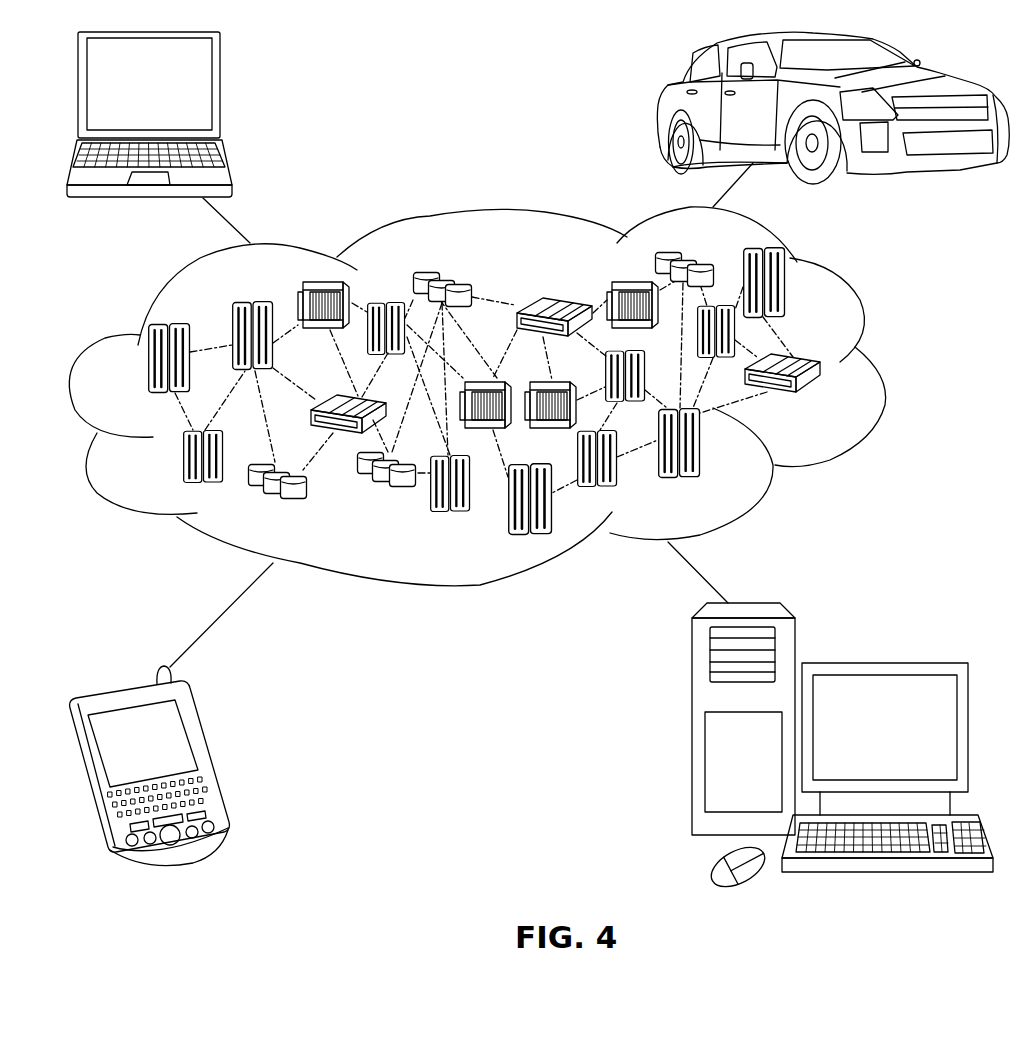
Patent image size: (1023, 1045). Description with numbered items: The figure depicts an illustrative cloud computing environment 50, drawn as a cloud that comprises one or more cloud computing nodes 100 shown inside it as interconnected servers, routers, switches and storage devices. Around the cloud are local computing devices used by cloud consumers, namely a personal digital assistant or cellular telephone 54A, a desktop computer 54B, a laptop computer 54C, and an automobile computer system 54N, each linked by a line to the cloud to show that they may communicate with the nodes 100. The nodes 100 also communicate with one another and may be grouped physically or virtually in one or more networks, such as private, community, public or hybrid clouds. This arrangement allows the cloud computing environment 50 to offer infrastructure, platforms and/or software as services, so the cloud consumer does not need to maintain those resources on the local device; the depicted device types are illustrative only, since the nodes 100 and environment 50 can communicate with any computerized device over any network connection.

The cloud computing environment 50 is at (883, 368).
The cloud computing nodes 100 is at (832, 402).
The personal digital assistant or cellular telephone 54A is at (208, 757).
The desktop computer 54B is at (883, 660).
The laptop computer 54C is at (220, 92).
The automobile computer system 54N is at (667, 107).